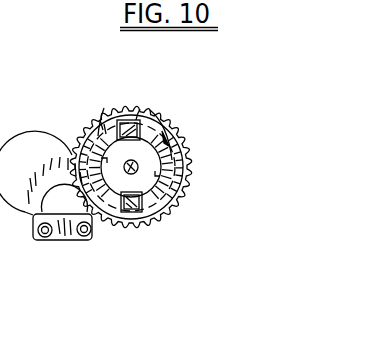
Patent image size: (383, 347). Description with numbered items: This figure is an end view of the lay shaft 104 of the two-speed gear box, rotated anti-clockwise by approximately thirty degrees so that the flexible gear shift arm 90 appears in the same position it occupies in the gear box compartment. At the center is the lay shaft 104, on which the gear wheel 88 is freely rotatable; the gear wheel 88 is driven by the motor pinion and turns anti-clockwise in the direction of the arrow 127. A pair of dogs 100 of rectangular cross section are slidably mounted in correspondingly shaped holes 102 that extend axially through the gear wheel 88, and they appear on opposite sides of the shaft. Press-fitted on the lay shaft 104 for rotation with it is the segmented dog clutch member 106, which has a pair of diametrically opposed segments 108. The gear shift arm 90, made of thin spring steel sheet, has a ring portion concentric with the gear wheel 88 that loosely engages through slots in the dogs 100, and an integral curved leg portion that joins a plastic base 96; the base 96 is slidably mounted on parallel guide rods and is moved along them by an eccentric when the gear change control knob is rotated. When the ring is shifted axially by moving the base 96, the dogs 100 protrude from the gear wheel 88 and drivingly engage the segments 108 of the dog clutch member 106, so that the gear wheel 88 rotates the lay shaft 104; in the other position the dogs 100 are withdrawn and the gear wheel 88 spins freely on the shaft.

The gear wheel 88 is at (175, 208).
The flexible gear shift arm 90 is at (44, 158).
The plastic base 96 is at (67, 241).
The dogs 100 is at (122, 120).
The holes 102 is at (135, 107).
The lay shaft 104 is at (134, 162).
The segmented dog clutch member 106 is at (122, 174).
The segments 108 is at (112, 118).
The arrow 127 is at (182, 157).